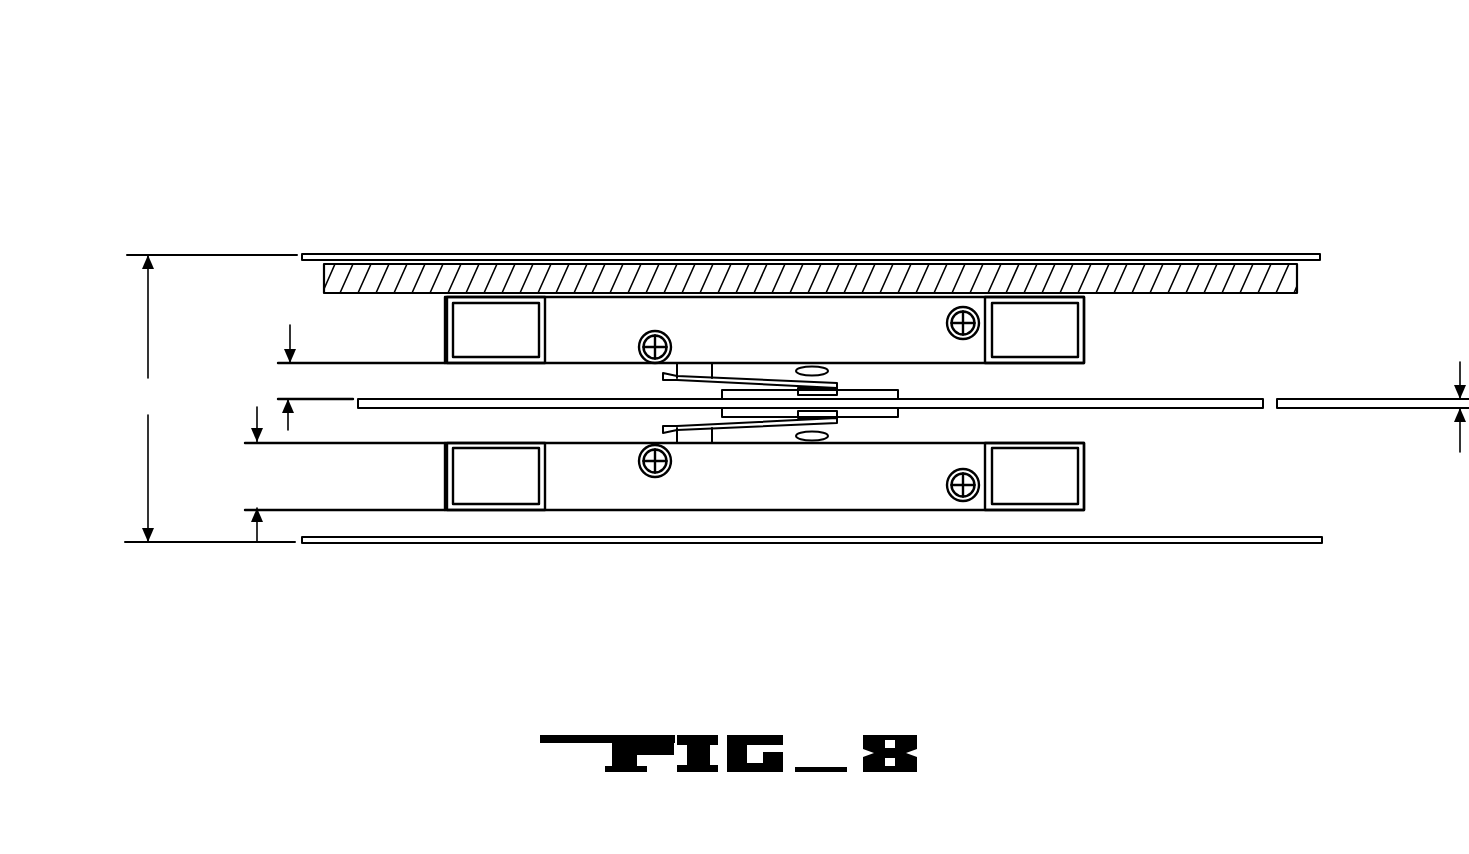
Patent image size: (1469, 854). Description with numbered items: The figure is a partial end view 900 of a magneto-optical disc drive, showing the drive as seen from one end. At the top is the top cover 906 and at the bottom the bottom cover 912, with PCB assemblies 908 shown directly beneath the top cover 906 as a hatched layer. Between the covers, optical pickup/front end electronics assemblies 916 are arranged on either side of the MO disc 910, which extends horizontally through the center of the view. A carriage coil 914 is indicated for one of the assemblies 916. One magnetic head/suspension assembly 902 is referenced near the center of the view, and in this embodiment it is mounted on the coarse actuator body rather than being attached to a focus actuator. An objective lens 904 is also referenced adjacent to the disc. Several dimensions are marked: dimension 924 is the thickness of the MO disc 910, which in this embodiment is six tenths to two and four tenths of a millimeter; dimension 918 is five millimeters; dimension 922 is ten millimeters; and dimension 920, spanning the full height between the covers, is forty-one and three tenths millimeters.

The end view 900 is at (405, 82).
The magnetic head/suspension assembly 902 is at (765, 377).
The objective lens 904 is at (818, 365).
The top cover 906 is at (1290, 254).
The PCB assemblies 908 is at (1297, 280).
The MO disc 910 is at (1200, 398).
The bottom cover 912 is at (1322, 540).
The carriage coil 914 is at (1084, 332).
The optical pickup/front end electronics assemblies 916 is at (912, 363).
The dimension 918 is at (290, 332).
The dimension 920 is at (211, 398).
The dimension 922 is at (257, 415).
The dimension 924 is at (1460, 440).